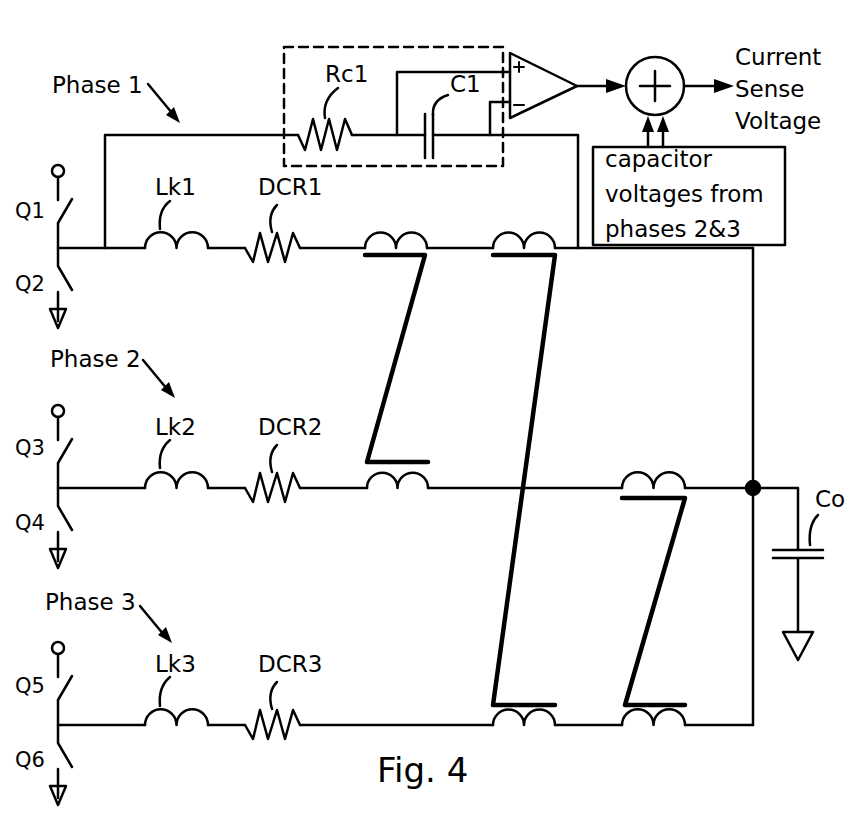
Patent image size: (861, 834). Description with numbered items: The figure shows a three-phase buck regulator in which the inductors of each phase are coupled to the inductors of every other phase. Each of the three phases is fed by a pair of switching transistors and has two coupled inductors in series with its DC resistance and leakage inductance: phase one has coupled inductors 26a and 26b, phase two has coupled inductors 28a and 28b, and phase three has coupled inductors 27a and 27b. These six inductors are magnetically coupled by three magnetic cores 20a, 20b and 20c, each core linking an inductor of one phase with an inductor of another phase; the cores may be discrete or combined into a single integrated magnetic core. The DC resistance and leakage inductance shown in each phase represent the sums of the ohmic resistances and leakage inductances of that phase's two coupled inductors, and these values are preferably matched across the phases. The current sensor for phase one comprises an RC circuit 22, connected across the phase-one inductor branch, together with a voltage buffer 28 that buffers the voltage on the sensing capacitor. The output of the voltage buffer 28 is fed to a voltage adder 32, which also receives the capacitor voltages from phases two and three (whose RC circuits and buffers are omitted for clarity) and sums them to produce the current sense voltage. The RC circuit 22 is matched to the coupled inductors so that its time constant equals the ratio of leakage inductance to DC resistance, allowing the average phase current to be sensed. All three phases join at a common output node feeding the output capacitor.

The RC circuit 22 is at (284, 80).
The voltage buffer 28 is at (537, 62).
The voltage adder 32 is at (648, 58).
The coupled inductor 26a is at (377, 233).
The coupled inductor 26b is at (503, 233).
The coupled inductor 28a is at (426, 478).
The coupled inductor 28b is at (632, 473).
The coupled inductor 27a is at (523, 727).
The coupled inductor 27b is at (652, 727).
The magnetic core 20a is at (400, 350).
The magnetic core 20b is at (550, 322).
The magnetic core 20c is at (657, 605).